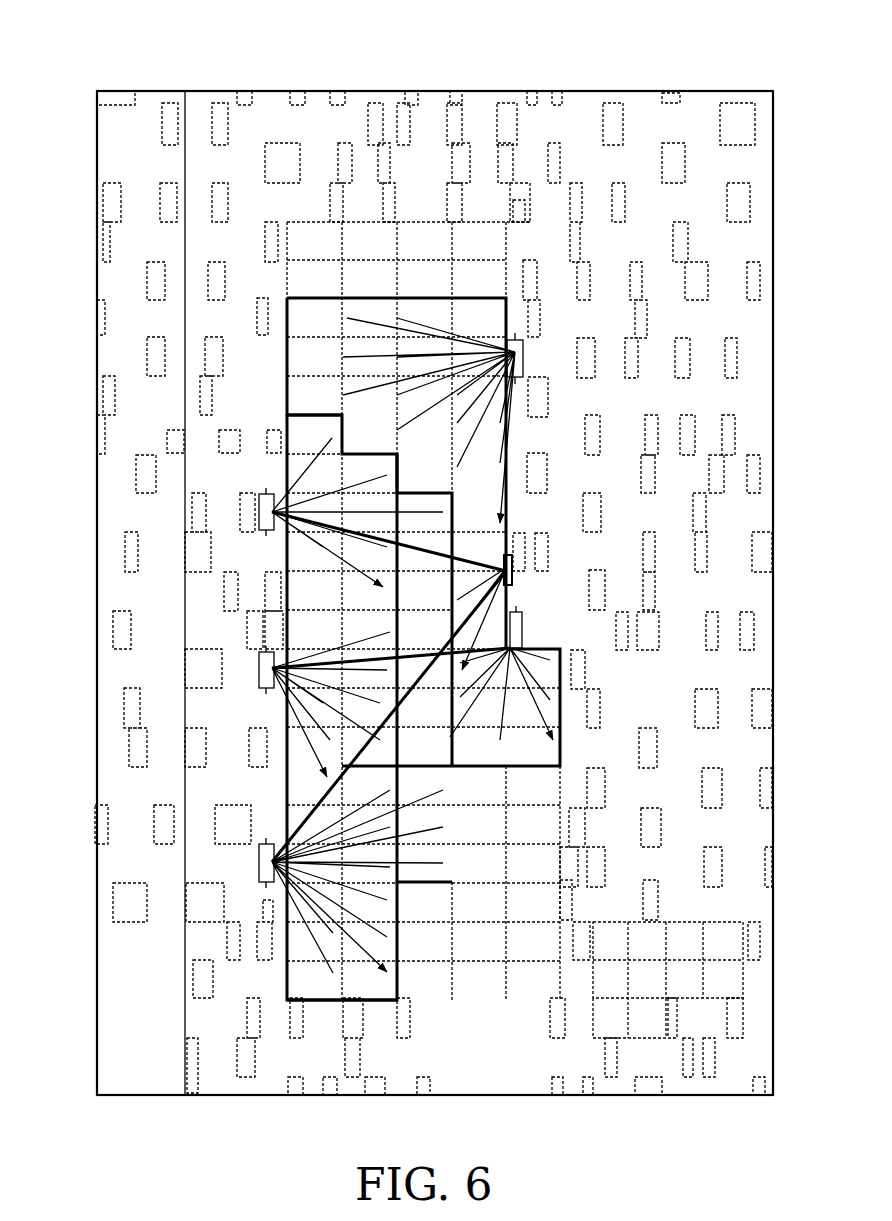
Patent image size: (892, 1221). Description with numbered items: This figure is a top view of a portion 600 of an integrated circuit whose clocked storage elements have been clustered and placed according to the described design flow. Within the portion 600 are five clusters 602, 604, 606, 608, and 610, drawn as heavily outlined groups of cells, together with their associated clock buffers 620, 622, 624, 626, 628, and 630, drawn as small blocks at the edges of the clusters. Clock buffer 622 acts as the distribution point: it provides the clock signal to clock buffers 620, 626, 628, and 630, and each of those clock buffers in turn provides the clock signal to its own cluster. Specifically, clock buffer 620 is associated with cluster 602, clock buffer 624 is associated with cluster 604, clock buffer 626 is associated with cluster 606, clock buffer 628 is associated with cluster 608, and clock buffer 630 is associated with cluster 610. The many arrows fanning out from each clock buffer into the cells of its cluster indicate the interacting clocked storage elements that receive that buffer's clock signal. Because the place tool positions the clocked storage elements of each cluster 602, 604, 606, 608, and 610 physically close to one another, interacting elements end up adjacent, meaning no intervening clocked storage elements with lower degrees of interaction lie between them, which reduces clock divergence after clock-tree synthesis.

The portion of an integrated circuit 600 is at (95, 44).
The cluster 602 is at (506, 298).
The cluster 604 is at (550, 648).
The cluster 606 is at (383, 1000).
The cluster 608 is at (287, 790).
The cluster 610 is at (285, 463).
The clock buffer 620 is at (528, 348).
The clock buffer 622 is at (510, 545).
The clock buffer 624 is at (516, 612).
The clock buffer 626 is at (258, 862).
The clock buffer 628 is at (262, 690).
The clock buffer 630 is at (268, 533).